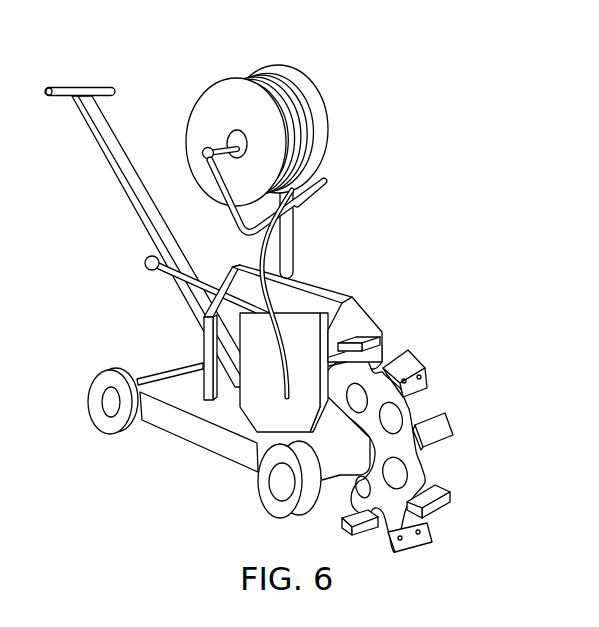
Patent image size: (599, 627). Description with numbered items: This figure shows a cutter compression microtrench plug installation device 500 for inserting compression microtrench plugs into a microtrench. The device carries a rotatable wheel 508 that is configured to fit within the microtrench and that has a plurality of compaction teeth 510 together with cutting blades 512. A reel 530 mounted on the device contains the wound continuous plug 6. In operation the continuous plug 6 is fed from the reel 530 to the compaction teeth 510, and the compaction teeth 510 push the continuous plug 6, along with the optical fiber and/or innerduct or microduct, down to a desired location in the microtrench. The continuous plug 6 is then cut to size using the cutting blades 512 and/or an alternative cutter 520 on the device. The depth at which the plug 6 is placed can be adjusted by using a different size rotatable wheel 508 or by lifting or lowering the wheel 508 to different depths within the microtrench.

The cutter compression microtrench plug installation device 500 is at (123, 148).
The reel 530 is at (309, 125).
The continuous plug 6 is at (294, 250).
The compaction teeth 510 is at (420, 362).
The cutting blades 512 is at (430, 373).
The rotatable wheel 508 is at (423, 465).
The alternative cutter 520 is at (257, 413).